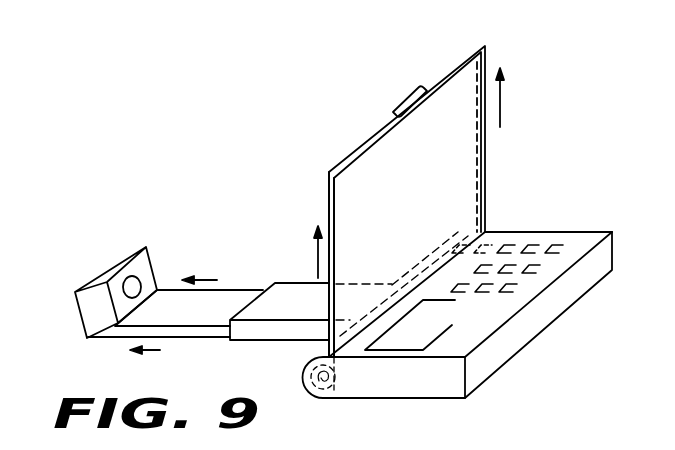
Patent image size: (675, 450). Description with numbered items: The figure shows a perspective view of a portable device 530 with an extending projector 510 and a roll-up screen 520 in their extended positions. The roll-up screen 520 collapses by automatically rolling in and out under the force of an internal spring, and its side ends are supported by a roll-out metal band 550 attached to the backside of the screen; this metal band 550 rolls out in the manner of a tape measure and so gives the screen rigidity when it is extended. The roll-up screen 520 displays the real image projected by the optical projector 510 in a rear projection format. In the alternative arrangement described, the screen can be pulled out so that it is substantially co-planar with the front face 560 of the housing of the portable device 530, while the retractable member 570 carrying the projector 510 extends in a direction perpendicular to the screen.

The extending projector 510 is at (98, 275).
The roll-up screen 520 is at (461, 43).
The portable device 530 is at (498, 367).
The roll-out metal band 550 is at (328, 177).
The front face 560 is at (573, 247).
The retractable member 570 is at (188, 338).